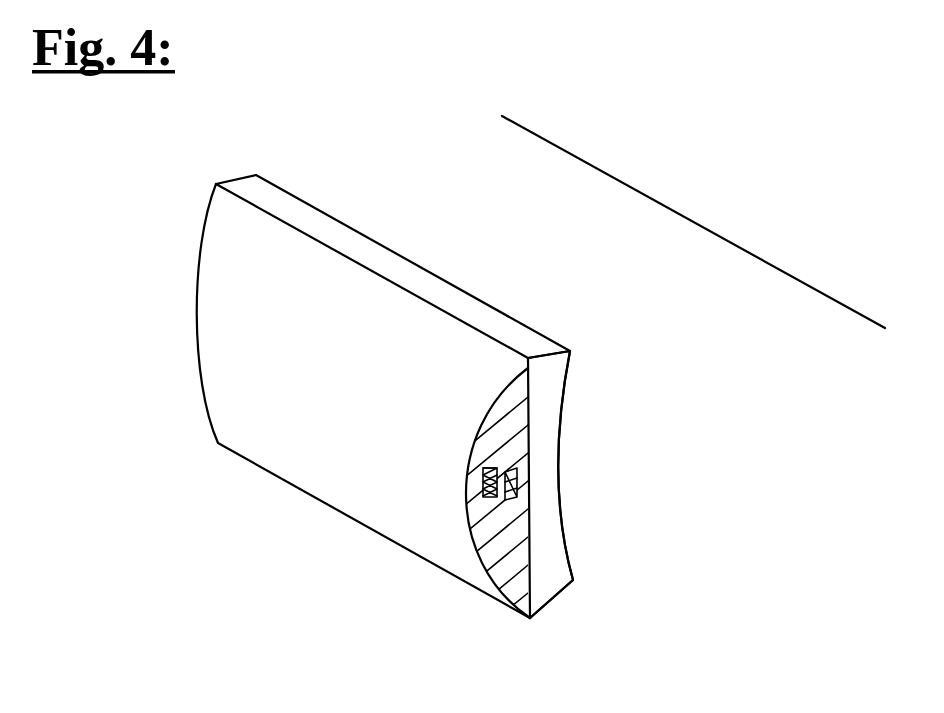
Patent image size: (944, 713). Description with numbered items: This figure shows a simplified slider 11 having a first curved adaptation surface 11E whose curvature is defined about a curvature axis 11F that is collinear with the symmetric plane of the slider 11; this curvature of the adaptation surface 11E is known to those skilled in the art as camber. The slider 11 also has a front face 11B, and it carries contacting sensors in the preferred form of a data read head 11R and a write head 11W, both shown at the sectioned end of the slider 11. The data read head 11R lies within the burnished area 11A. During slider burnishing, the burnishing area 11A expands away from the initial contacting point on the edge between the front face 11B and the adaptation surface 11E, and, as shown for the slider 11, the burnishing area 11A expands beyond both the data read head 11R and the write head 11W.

The slider 11 is at (394, 276).
The adaptation surface 11E is at (260, 444).
The curvature axis 11F is at (716, 240).
The front face 11B is at (540, 400).
The burnished area 11A is at (513, 562).
The write head 11W is at (497, 478).
The data read head 11R is at (518, 527).